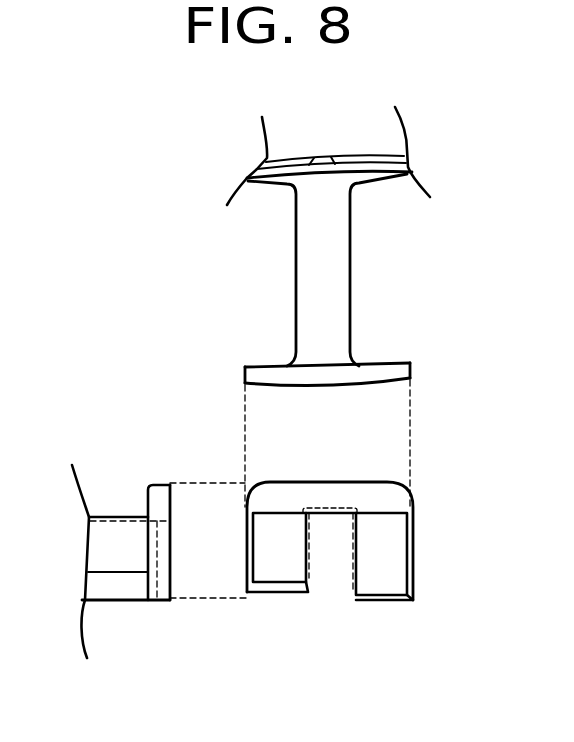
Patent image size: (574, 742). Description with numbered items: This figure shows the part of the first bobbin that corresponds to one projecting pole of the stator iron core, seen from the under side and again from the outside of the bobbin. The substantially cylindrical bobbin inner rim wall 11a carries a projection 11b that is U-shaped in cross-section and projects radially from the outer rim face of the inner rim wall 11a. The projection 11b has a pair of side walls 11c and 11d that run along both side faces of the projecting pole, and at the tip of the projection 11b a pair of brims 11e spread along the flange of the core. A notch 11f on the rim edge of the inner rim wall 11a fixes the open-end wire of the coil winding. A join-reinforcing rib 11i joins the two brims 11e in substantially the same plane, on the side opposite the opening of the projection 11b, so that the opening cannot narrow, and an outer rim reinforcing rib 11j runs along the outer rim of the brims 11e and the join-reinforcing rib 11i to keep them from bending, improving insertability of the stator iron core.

The bobbin inner rim wall 11a is at (367, 157).
The projection 11b is at (351, 240).
The side wall 11c is at (351, 283).
The side wall 11d is at (296, 288).
The brim 11e is at (380, 363).
The notch 11f is at (322, 162).
The join-reinforcing rib 11i is at (282, 363).
The outer rim reinforcing rib 11j is at (245, 372).